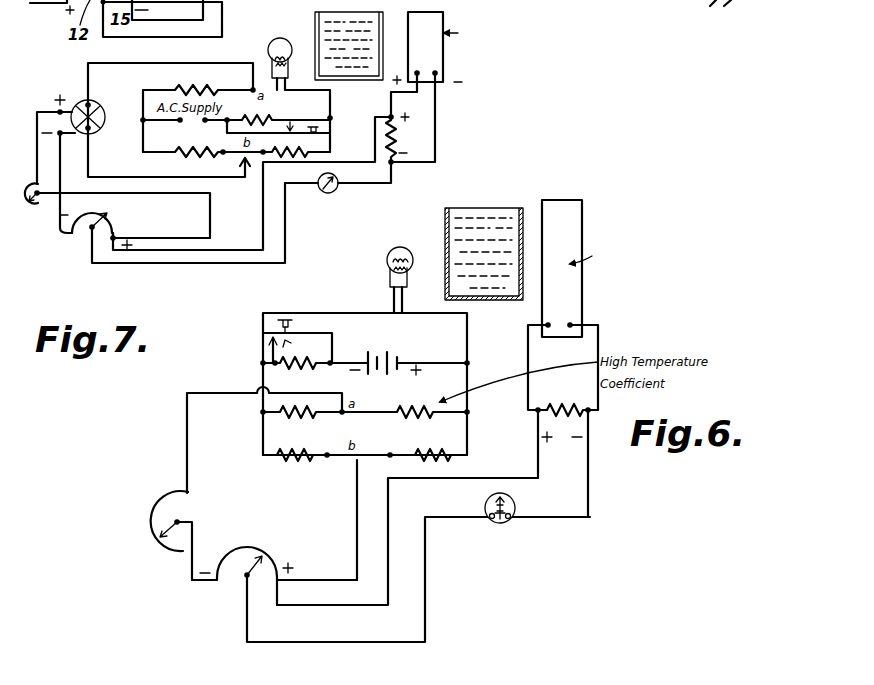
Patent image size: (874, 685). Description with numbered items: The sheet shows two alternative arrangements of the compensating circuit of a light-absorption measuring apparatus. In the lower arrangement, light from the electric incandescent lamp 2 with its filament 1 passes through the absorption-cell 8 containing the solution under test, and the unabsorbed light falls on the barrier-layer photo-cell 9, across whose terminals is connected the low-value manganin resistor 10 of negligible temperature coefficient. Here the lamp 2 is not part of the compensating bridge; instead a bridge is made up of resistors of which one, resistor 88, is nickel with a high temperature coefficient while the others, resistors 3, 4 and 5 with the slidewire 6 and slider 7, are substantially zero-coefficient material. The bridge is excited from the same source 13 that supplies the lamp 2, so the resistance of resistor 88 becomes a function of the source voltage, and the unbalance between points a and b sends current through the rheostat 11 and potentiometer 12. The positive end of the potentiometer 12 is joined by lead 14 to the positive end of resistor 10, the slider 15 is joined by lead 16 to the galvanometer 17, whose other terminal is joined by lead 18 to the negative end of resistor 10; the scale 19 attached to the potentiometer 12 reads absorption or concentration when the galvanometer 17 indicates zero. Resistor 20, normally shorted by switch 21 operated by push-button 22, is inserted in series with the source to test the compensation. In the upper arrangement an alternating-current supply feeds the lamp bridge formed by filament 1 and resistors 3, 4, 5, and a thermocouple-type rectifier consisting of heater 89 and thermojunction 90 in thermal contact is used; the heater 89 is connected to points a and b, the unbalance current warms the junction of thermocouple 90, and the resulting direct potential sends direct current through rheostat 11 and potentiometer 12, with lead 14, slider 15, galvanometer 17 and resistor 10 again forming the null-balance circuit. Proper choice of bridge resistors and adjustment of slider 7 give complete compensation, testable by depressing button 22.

In FIG. 7, the filament 1 is at (272, 52).
In FIG. 6, the filament 1 is at (408, 264).
In FIG. 7, the electric incandescent lamp 2 is at (282, 47).
In FIG. 6, the electric incandescent lamp 2 is at (397, 247).
In FIG. 7, the resistor 3 is at (216, 76).
In FIG. 6, the resistor 3 is at (299, 418).
In FIG. 7, the resistor 4 is at (196, 140).
In FIG. 6, the resistor 4 is at (296, 462).
In FIG. 7, the resistor 5 is at (300, 150).
In FIG. 6, the resistor 5 is at (435, 454).
In FIG. 7, the slidewire 6 is at (218, 158).
In FIG. 6, the slidewire 6 is at (375, 452).
In FIG. 6, the slider 7 is at (364, 465).
In FIG. 7, the absorption-cell 8 is at (374, 66).
In FIG. 6, the absorption-cell 8 is at (490, 208).
In FIG. 7, the photo-cell 9 is at (445, 33).
In FIG. 6, the photo-cell 9 is at (553, 212).
In FIG. 7, the resistor 10 is at (392, 140).
In FIG. 6, the resistor 10 is at (579, 407).
In FIG. 7, the rheostat 11 is at (39, 183).
In FIG. 6, the rheostat 11 is at (146, 529).
In FIG. 7, the potentiometer 12 is at (108, 207).
In FIG. 6, the potentiometer 12 is at (232, 546).
In FIG. 6, the source 13 is at (403, 353).
In FIG. 7, the lead 14 is at (263, 197).
In FIG. 7, the slider 15 is at (92, 227).
In FIG. 6, the slider 15 is at (247, 575).
In FIG. 7, the lead 16 is at (147, 265).
In FIG. 6, the lead 16 is at (455, 518).
In FIG. 7, the galvanometer 17 is at (317, 181).
In FIG. 6, the galvanometer 17 is at (497, 523).
In FIG. 7, the lead 18 is at (357, 187).
In FIG. 6, the lead 18 is at (559, 518).
In FIG. 6, the scale 19 is at (492, 478).
In FIG. 7, the resistor 20 is at (266, 95).
In FIG. 6, the resistor 20 is at (306, 366).
In FIG. 7, the switch 21 is at (278, 126).
In FIG. 6, the switch 21 is at (286, 341).
In FIG. 7, the push-button 22 is at (318, 126).
In FIG. 6, the push-button 22 is at (292, 316).
In FIG. 6, the resistor 88 is at (426, 419).
In FIG. 7, the heater 89 is at (98, 104).
In FIG. 7, the thermojunction 90 is at (72, 100).